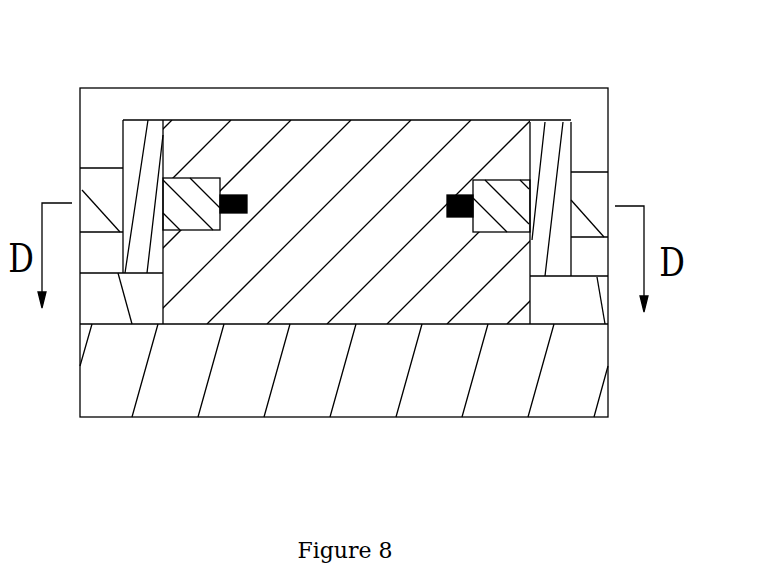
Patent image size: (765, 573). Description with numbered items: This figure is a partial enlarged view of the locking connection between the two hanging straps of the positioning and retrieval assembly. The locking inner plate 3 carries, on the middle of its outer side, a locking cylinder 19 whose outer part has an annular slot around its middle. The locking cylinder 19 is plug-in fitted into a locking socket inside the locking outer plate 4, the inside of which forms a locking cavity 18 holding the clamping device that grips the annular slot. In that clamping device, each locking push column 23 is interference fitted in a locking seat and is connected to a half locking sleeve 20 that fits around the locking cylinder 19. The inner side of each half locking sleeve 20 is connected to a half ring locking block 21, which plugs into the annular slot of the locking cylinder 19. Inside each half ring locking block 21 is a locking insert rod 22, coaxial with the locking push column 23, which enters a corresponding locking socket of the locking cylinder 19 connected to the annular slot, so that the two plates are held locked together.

The locking inner plate 3 is at (378, 360).
The locking outer plate 4 is at (578, 307).
The locking cavity 18 is at (268, 110).
The locking cylinder 19 is at (370, 147).
The half locking sleeve 20 is at (547, 145).
The half ring locking block 21 is at (197, 188).
The locking insert rod 22 is at (453, 193).
The locking push column 23 is at (105, 187).